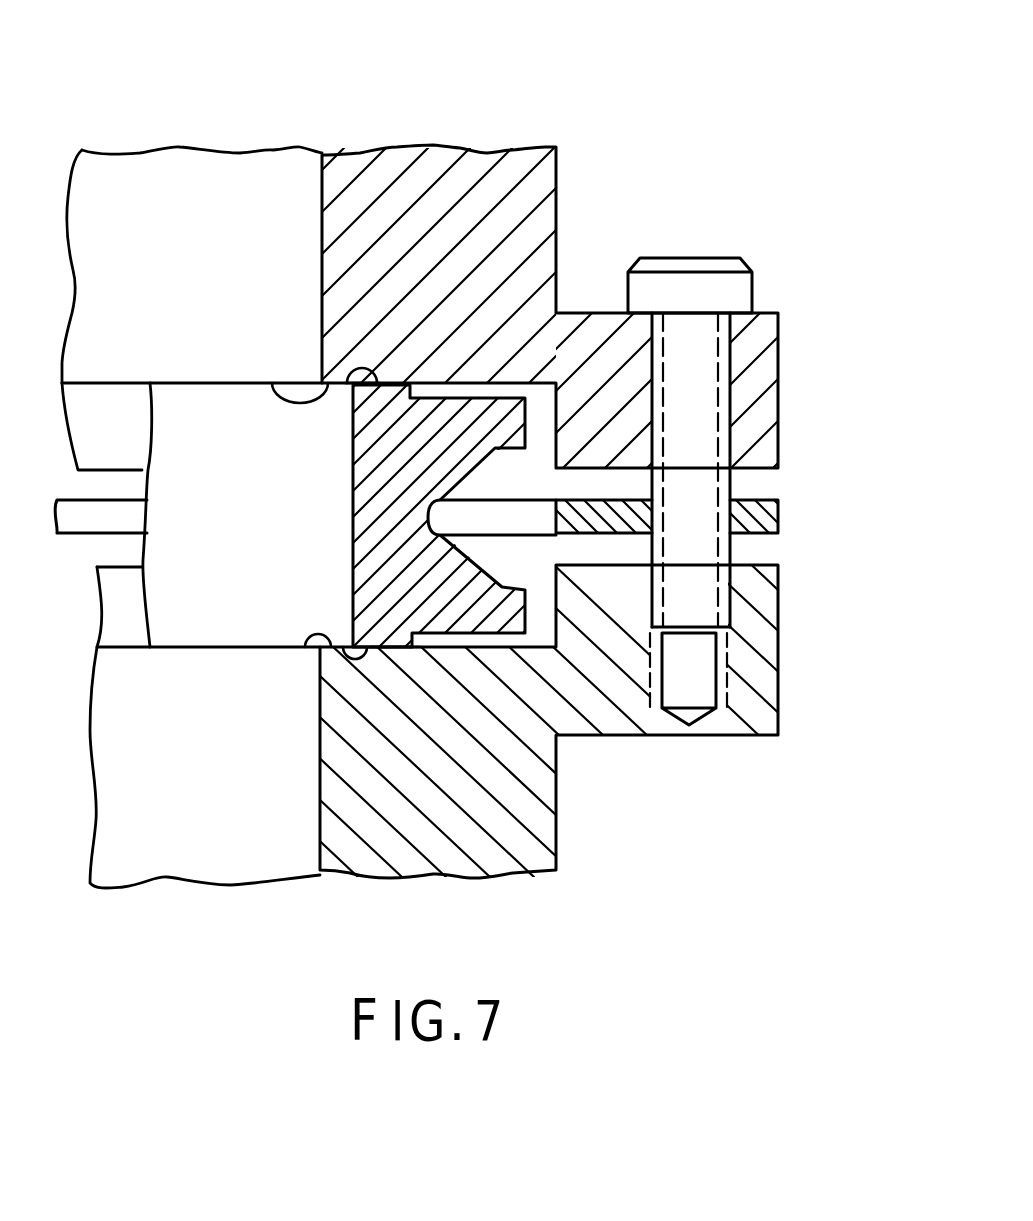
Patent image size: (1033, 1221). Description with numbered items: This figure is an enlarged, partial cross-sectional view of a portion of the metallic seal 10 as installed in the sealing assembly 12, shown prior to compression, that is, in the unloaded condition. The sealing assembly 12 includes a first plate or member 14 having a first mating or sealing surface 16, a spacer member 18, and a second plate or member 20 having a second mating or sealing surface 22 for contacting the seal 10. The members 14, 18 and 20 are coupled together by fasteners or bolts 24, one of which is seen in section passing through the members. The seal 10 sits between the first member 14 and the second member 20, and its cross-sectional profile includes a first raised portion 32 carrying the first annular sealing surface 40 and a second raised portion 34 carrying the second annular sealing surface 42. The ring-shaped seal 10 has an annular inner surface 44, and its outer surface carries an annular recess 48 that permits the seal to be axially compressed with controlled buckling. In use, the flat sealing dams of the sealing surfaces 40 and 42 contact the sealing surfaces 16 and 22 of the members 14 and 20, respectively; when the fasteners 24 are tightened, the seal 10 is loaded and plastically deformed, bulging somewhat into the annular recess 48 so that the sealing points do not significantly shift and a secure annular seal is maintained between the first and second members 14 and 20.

The metallic seal 10 is at (197, 375).
The sealing assembly 12 is at (529, 101).
The first plate or member 14 is at (568, 816).
The first mating or sealing surface 16 is at (305, 650).
The spacer member 18 is at (786, 518).
The second plate or member 20 is at (560, 176).
The second mating or sealing surface 22 is at (272, 383).
The fasteners or bolts 24 is at (702, 252).
The first raised portion 32 is at (391, 660).
The second raised portion 34 is at (391, 376).
The first annular sealing surface 40 is at (350, 645).
The second annular sealing surface 42 is at (350, 384).
The annular inner surface 44 is at (353, 508).
The annular recess 48 is at (487, 489).